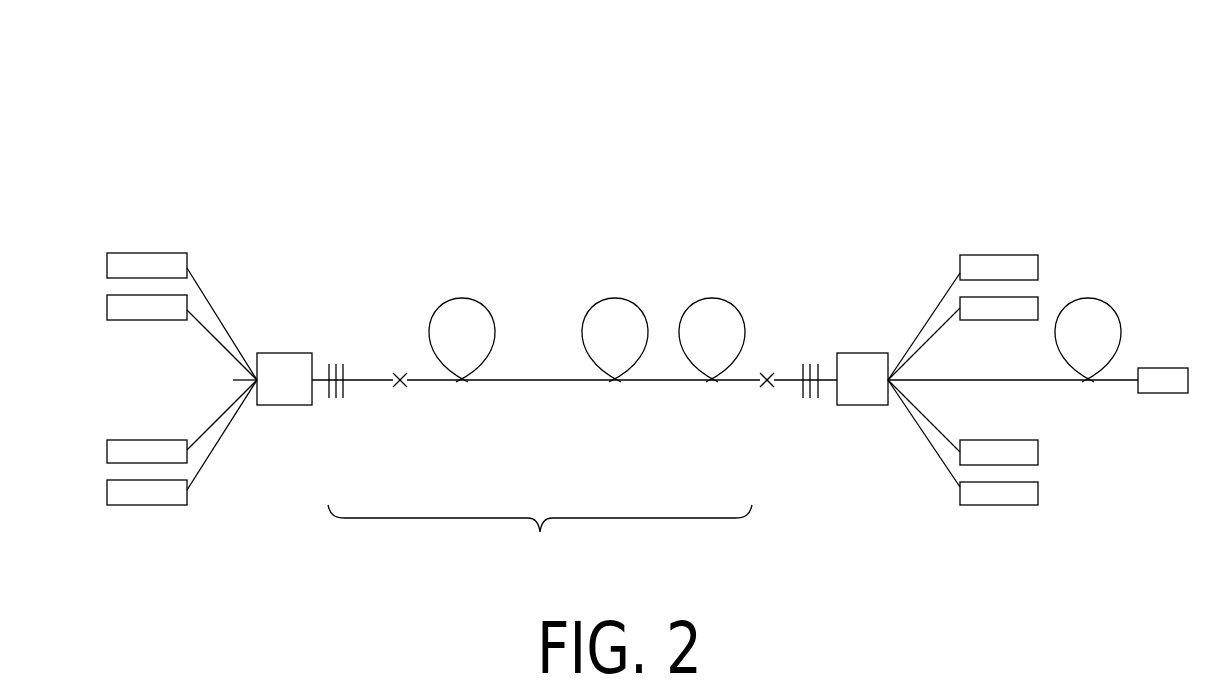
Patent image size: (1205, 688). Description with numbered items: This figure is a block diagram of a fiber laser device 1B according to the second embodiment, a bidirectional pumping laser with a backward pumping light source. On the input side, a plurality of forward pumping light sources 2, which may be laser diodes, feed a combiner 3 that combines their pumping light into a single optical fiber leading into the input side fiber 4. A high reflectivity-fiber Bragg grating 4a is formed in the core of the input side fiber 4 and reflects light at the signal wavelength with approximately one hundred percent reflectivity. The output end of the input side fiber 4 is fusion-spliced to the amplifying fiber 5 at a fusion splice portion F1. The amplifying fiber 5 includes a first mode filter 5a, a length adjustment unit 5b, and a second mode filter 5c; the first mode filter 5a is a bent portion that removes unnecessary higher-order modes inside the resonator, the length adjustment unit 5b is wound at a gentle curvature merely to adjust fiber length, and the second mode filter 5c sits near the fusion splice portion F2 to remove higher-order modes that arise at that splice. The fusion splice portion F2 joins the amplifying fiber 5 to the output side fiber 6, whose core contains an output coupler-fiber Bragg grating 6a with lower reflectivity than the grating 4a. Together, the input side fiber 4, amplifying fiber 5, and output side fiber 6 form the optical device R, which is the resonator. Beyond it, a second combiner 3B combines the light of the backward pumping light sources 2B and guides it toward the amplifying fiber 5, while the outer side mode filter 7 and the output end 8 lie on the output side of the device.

The fiber laser device 1B is at (110, 170).
The pumping light sources 2 is at (150, 253).
The combiner 3 is at (283, 407).
The input side fiber 4 is at (368, 395).
The high reflectivity-fiber Bragg grating (HR-FBG) 4a is at (338, 362).
The fusion splice portion F1 is at (404, 372).
The amplifying fiber 5 is at (583, 409).
The first mode filter 5a is at (495, 352).
The length adjustment unit 5b is at (587, 355).
The second mode filter 5c is at (680, 345).
The fusion splice portion F2 is at (768, 372).
The output side fiber 6 is at (780, 400).
The output coupler-fiber Bragg grating (OC-FBG) 6a is at (810, 362).
The second combiner 3B is at (860, 407).
The backward pumping light sources 2B is at (1000, 255).
The outer side mode filter 7 is at (1085, 298).
The output end 8 is at (1163, 394).
The optical device R is at (540, 537).